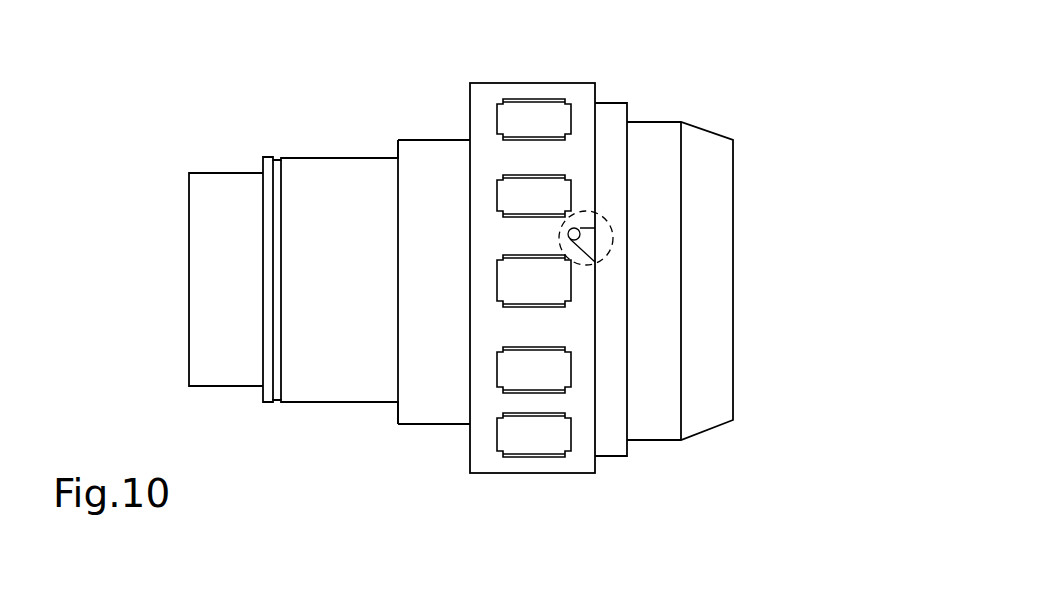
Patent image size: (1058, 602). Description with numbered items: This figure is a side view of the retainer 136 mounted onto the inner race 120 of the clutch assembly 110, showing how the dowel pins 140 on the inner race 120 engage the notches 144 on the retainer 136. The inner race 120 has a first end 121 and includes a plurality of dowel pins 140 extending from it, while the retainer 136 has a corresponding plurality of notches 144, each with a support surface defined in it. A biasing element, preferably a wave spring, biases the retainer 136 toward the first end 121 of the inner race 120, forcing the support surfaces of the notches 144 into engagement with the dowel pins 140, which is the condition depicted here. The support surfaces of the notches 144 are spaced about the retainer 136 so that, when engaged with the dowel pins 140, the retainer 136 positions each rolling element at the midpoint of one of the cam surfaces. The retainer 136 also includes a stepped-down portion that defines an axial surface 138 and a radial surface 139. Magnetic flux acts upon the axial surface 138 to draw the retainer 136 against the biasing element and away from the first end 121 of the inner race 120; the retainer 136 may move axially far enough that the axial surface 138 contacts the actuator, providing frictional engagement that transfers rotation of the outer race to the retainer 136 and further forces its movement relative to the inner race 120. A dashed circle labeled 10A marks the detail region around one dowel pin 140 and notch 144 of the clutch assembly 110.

The clutch assembly 110 is at (639, 498).
The inner race 120 is at (662, 441).
The first end 121 is at (733, 340).
The retainer 136 is at (607, 113).
The axial surface 138 is at (468, 452).
The radial surface 139 is at (434, 140).
The dowel pins 140 is at (576, 229).
The notches 144 is at (597, 252).
The detail view circle 10A is at (608, 216).